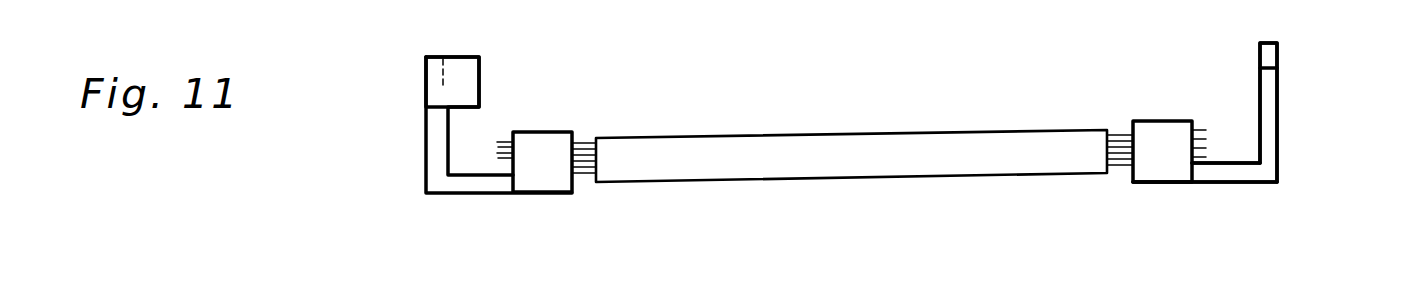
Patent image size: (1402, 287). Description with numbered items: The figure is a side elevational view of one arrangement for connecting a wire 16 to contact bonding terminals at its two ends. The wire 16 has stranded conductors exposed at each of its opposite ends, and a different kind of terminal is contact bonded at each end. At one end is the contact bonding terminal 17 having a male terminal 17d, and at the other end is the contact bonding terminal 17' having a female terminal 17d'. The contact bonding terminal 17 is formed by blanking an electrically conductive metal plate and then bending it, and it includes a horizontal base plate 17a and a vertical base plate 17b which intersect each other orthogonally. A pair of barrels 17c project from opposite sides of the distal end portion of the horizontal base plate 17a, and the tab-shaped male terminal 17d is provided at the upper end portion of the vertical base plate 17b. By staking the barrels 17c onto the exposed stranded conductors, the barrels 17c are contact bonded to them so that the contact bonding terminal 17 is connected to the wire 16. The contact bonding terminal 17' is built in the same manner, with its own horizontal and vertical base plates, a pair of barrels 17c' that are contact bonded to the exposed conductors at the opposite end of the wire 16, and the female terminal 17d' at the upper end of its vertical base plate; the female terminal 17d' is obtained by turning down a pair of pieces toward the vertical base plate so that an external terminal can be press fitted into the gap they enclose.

The wire 16 is at (862, 128).
The contact bonding terminal 17 is at (1247, 91).
The contact bonding terminal 17' is at (524, 111).
The horizontal base plate 17a is at (1235, 170).
The vertical base plate 17b is at (1272, 117).
The barrels 17c is at (1156, 190).
The barrels 17c' is at (556, 196).
The male terminal 17d is at (1196, 34).
The female terminal 17d' is at (390, 93).